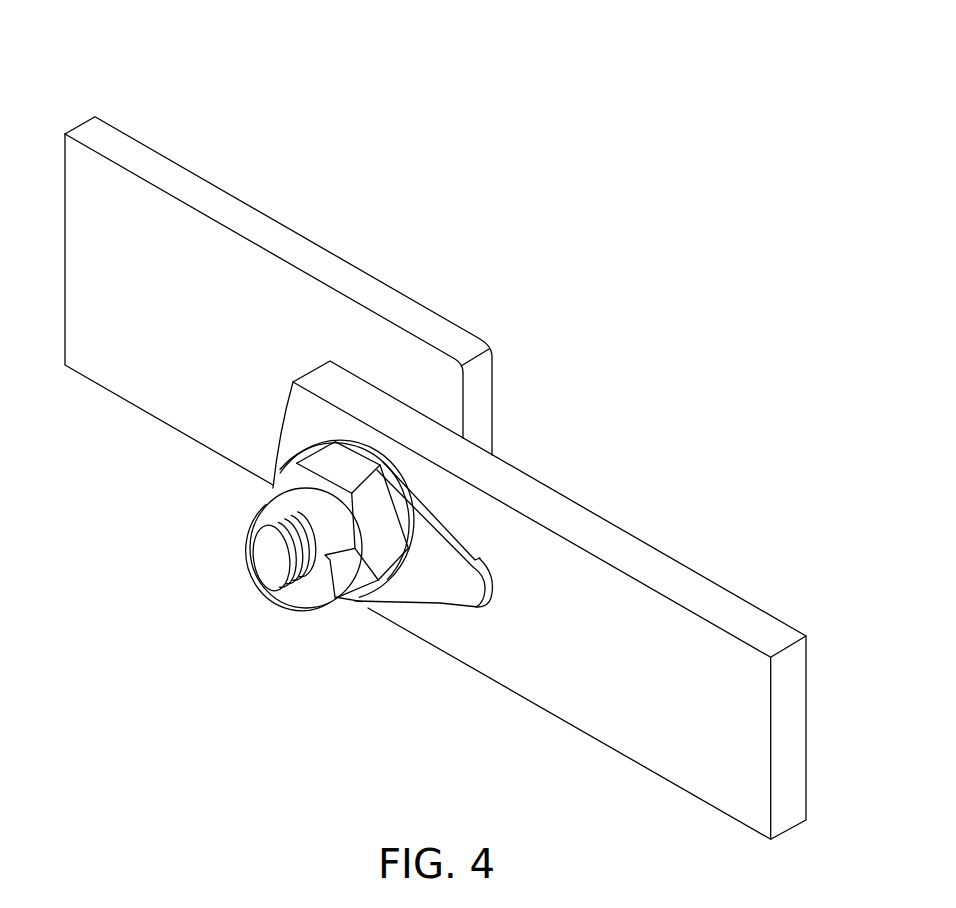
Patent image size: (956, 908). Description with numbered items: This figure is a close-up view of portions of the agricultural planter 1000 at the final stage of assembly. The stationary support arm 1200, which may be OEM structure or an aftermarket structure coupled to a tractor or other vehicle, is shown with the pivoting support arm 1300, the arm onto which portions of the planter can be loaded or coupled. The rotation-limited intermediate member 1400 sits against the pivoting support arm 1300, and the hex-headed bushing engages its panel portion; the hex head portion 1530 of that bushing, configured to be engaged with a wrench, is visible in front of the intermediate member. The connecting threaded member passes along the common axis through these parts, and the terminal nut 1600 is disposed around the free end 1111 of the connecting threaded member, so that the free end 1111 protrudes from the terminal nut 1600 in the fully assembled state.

The agricultural planter 1000 is at (604, 118).
The stationary support arm 1200 is at (290, 215).
The pivoting support arm 1300 is at (689, 553).
The rotation-limited intermediate member 1400 is at (489, 527).
The terminal nut 1600 is at (319, 613).
The hex-headed bushing internally threaded hex head portion 1530 is at (362, 604).
The free end 1111 is at (273, 568).